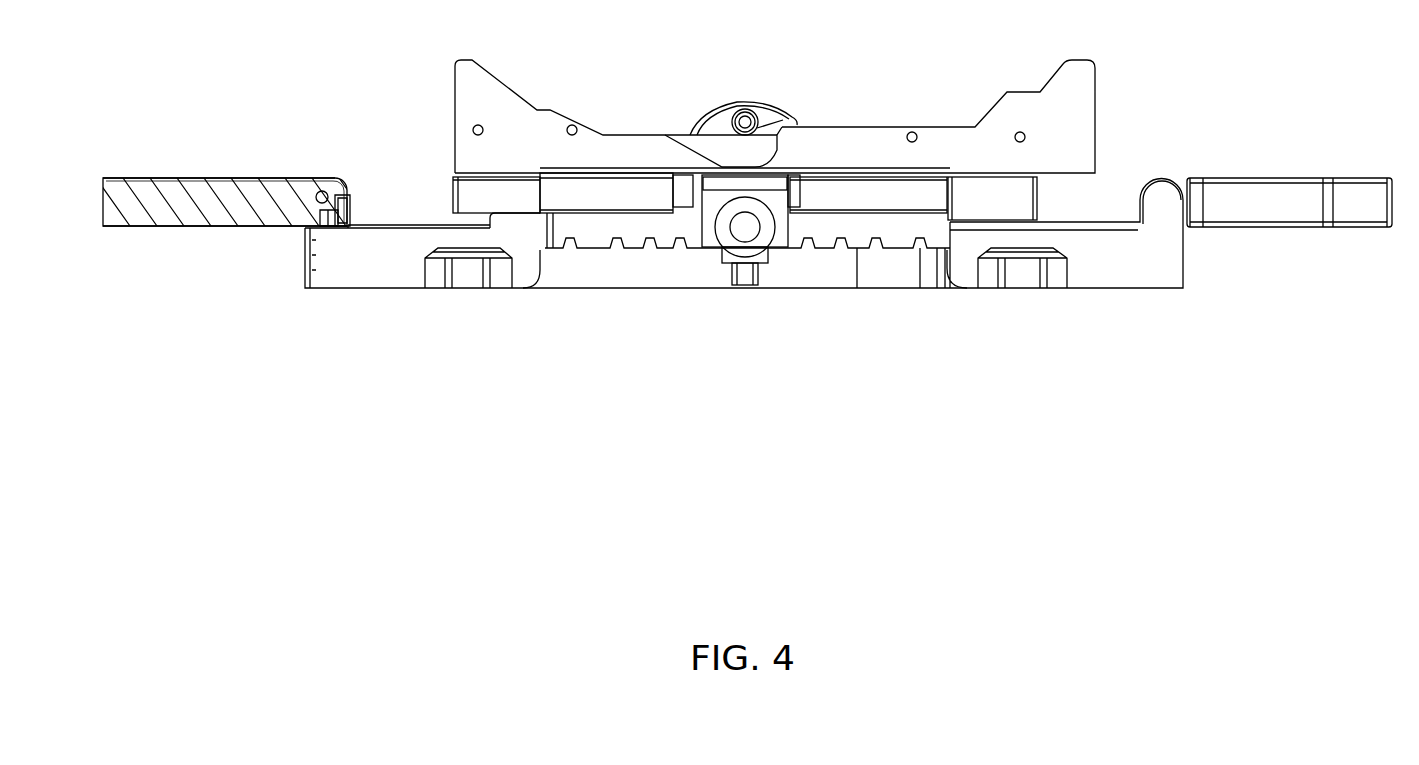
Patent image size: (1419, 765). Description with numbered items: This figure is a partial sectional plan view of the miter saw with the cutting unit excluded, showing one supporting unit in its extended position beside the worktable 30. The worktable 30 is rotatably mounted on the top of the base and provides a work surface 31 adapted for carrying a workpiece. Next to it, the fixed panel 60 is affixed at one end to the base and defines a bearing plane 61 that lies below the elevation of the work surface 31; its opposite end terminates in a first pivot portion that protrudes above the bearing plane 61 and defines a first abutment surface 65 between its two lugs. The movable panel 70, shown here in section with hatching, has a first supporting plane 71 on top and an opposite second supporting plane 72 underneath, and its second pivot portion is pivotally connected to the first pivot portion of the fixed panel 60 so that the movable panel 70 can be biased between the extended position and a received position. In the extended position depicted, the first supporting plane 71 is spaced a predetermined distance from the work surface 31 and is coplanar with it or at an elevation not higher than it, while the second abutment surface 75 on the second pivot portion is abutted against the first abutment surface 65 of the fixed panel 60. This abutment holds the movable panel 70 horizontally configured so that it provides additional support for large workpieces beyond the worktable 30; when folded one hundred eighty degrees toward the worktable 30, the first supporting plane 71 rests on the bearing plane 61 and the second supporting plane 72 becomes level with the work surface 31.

The worktable 30 is at (867, 193).
The work surface 31 is at (877, 170).
The fixed panel 60 is at (394, 294).
The bearing plane 61 is at (410, 223).
The first abutment surface 65 is at (322, 230).
The movable panel 70 is at (171, 232).
The first supporting plane 71 is at (220, 178).
The second supporting plane 72 is at (228, 228).
The second abutment surface 75 is at (370, 218).